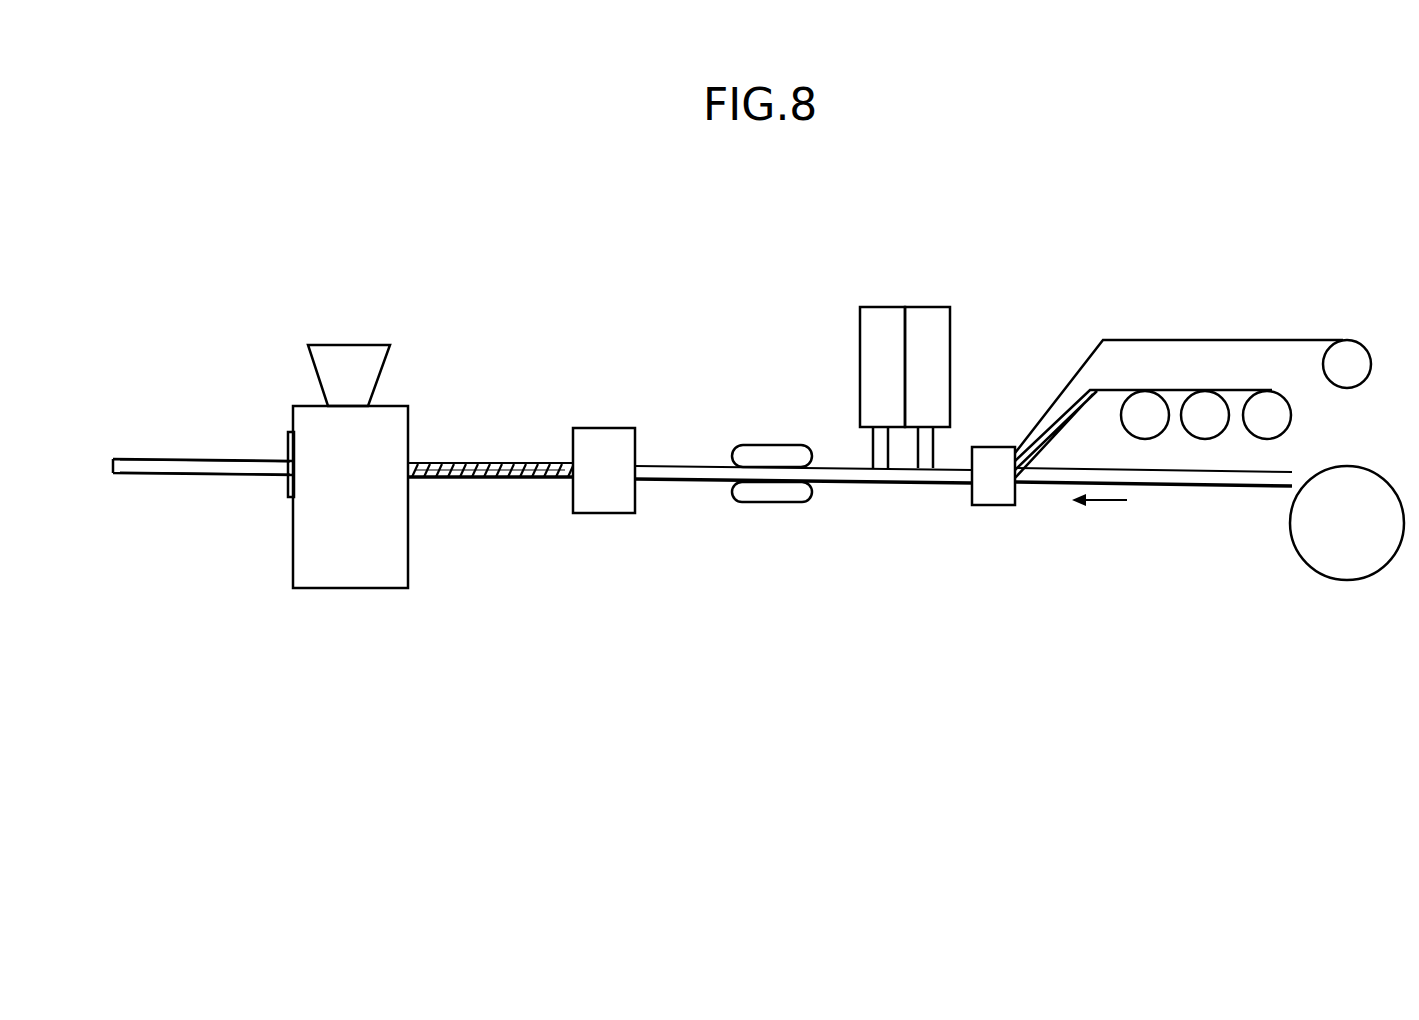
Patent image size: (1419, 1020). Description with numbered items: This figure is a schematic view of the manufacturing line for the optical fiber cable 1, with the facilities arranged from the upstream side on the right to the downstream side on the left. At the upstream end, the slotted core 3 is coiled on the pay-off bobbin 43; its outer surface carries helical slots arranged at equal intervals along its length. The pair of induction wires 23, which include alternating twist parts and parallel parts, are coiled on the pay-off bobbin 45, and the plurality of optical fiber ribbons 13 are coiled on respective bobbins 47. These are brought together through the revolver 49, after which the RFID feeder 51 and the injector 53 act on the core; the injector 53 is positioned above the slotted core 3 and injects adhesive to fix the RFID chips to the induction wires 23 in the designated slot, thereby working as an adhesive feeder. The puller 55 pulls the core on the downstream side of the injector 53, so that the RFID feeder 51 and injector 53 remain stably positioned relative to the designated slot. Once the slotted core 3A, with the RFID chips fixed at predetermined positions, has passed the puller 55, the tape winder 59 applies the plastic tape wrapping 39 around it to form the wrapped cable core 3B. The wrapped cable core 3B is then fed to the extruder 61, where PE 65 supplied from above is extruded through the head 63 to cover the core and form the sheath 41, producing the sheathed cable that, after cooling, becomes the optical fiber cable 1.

The optical fiber cable 1 is at (170, 450).
The sheath 41 is at (240, 464).
The head 63 is at (286, 487).
The extruder 61 is at (416, 561).
The PE 65 is at (349, 328).
The wrapped cable core 3B is at (460, 480).
The plastic tape wrapping 39 is at (518, 480).
The tape winder 59 is at (608, 514).
The slotted core 3A is at (684, 468).
The puller 55 is at (777, 493).
The injector 53 is at (884, 318).
The RFID feeder 51 is at (925, 315).
The revolver 49 is at (990, 497).
The slotted core 3 is at (1152, 482).
The pay-off bobbin 43 is at (1352, 569).
The induction wires 23 is at (1232, 338).
The pay-off bobbin 45 is at (1360, 372).
The optical fiber ribbons 13 is at (1258, 392).
The pay-off bobbins 47 is at (1275, 424).